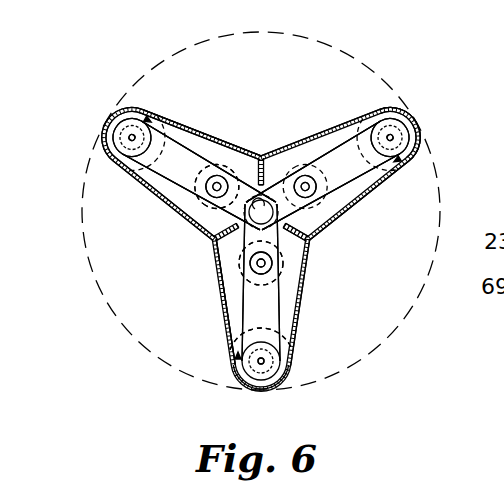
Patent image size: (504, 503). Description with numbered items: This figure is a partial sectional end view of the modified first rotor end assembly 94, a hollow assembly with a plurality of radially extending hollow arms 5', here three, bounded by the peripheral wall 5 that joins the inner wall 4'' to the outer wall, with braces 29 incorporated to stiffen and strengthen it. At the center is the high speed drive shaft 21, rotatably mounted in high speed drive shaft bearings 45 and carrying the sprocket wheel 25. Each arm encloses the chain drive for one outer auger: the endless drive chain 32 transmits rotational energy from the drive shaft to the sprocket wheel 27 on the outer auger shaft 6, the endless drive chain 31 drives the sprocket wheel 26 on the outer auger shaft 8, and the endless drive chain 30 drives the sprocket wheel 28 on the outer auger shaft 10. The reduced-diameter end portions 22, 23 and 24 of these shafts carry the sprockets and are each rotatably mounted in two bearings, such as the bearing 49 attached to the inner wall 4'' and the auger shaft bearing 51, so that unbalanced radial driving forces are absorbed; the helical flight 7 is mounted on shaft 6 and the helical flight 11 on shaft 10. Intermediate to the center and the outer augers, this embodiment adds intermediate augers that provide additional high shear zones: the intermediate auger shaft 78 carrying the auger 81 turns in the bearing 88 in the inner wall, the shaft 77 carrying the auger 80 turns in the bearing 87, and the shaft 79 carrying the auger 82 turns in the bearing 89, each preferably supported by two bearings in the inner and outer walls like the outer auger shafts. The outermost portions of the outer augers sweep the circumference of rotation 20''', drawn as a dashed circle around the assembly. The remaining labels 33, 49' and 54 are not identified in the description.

The rotor housing envelope 20''' is at (261, 211).
The outer auger shaft end portion 23 is at (132, 137).
The sprocket wheel 27 is at (110, 117).
The outer auger shaft 6 is at (116, 126).
The bearing 49 is at (150, 162).
The belt run 33 is at (142, 171).
The bearing 88 is at (200, 182).
The high speed drive shaft bearing 45 is at (197, 205).
The braces 29 is at (213, 237).
The sprocket wheel 25 is at (216, 244).
The helical flight 7 is at (166, 119).
The endless drive chain 32 is at (185, 141).
The intermediate auger 81 is at (205, 146).
The intermediate auger shaft 78 is at (218, 185).
The intermediate auger 80 is at (291, 160).
The bearing 87 is at (287, 166).
The endless drive chain 31 is at (335, 160).
The pulley rim 54 is at (364, 134).
The hollow arms 5' is at (328, 107).
The sprocket wheel 26 is at (393, 108).
The belt 49' is at (418, 114).
The outer auger shaft 8 is at (392, 137).
The outer auger shaft end portion 22 is at (427, 152).
The peripheral wall 5 is at (379, 201).
The first rotor end assembly 94 is at (384, 192).
The inner wall 4'' is at (330, 192).
The intermediate auger shaft 77 is at (332, 226).
The high speed drive shaft 21 is at (311, 240).
The intermediate auger 82 is at (282, 299).
The outer auger shaft 10 is at (298, 313).
The auger shaft bearing 51 is at (287, 329).
The outer auger shaft end portion 24 is at (264, 361).
The sprocket wheel 28 is at (266, 386).
The endless drive chain 30 is at (226, 320).
The helical flight 11 is at (245, 315).
The bearing 89 is at (252, 283).
The intermediate auger shaft 79 is at (250, 265).